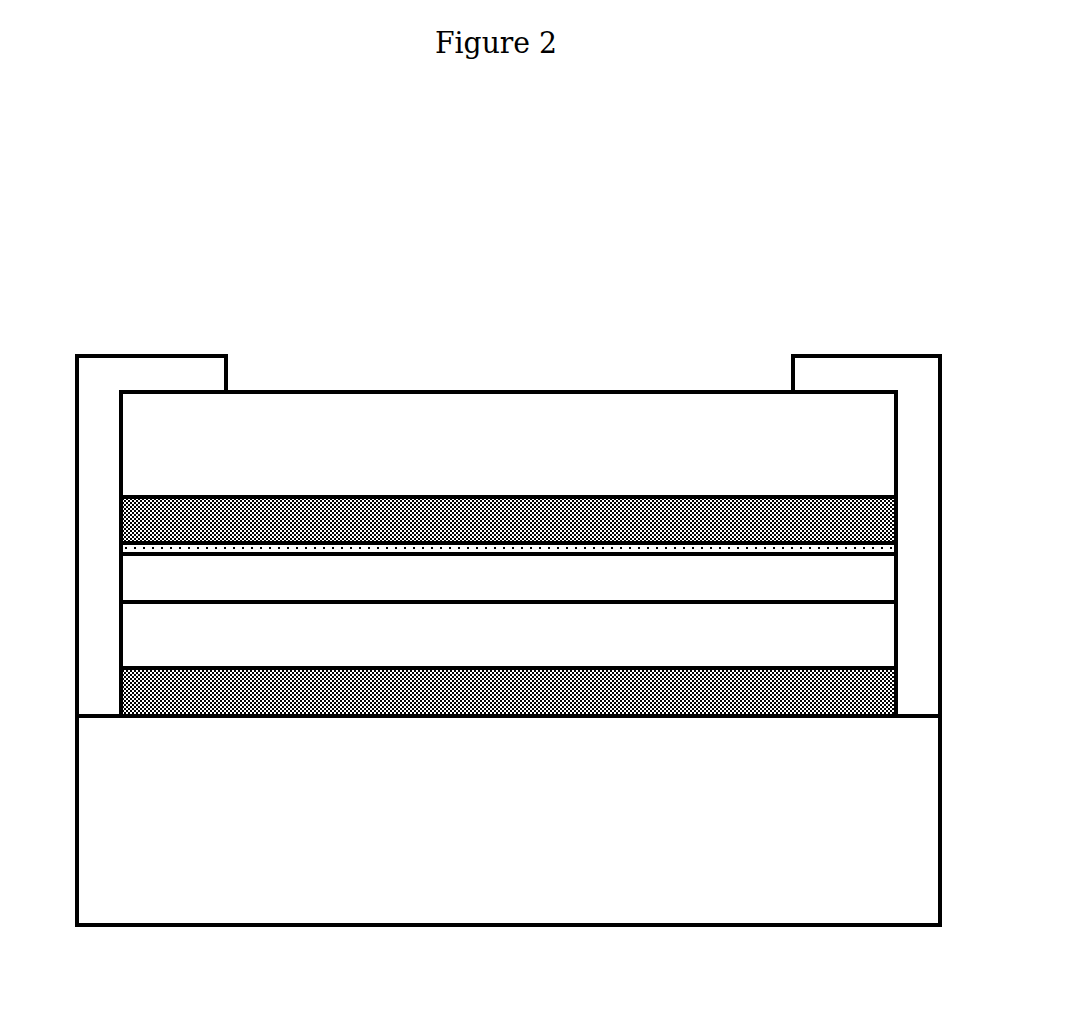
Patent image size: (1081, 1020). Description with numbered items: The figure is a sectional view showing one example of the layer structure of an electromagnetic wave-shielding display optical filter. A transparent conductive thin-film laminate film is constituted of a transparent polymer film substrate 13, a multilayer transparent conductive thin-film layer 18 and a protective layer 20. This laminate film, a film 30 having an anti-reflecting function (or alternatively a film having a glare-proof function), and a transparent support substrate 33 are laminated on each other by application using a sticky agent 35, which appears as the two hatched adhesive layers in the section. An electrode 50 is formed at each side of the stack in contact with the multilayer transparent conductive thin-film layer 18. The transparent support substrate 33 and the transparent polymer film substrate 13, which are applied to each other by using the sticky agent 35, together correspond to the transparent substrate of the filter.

The transparent polymer film substrate 13 is at (899, 635).
The multilayer transparent conductive thin-film layer 18 is at (899, 577).
The protective layer 20 is at (899, 545).
The anti-reflecting film 30 is at (533, 389).
The transparent support substrate 33 is at (943, 867).
The sticky agent 35 is at (899, 506).
The electrode 50 is at (146, 352).